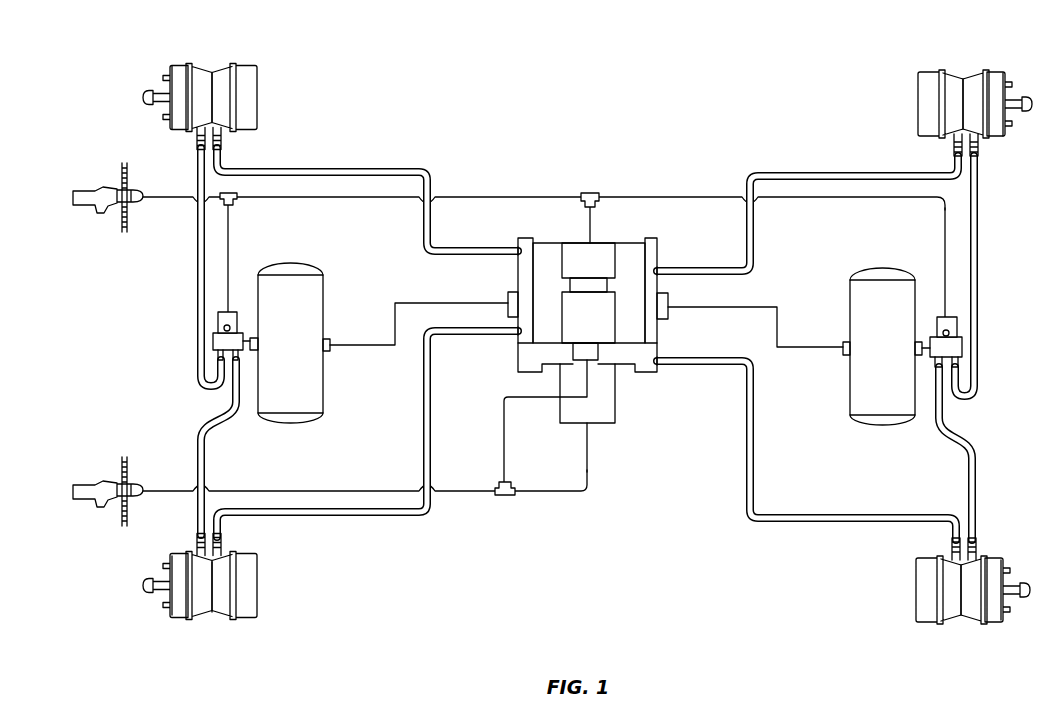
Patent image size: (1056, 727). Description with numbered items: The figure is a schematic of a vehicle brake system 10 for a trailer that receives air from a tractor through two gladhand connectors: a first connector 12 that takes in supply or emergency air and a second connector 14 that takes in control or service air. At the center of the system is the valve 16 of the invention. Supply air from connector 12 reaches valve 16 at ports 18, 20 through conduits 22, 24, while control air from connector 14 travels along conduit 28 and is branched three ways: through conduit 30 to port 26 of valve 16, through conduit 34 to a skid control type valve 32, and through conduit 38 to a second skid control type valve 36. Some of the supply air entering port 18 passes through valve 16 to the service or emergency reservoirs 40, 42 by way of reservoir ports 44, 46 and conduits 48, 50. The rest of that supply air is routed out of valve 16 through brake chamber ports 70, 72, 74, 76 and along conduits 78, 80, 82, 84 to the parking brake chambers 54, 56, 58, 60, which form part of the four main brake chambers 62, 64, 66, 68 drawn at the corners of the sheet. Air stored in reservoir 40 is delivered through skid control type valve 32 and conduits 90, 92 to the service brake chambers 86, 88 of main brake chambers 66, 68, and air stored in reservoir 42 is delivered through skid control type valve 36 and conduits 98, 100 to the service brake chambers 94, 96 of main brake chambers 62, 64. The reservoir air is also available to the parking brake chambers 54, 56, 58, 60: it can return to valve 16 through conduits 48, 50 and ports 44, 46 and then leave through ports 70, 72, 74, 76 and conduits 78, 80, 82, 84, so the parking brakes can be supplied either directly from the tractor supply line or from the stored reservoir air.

The vehicle brake system 10 is at (593, 125).
The first gladhand connector 12 is at (104, 482).
The second gladhand connector 14 is at (103, 188).
The valve 16 is at (593, 329).
The port 18 is at (588, 425).
The port 20 is at (592, 361).
The conduit 22 is at (447, 493).
The conduit 24 is at (504, 442).
The port 26 is at (590, 240).
The conduit 28 is at (506, 197).
The conduit 30 is at (590, 219).
The skid control type valve 32 is at (240, 328).
The conduit 34 is at (229, 234).
The skid control type valve 36 is at (937, 328).
The conduit 38 is at (945, 229).
The service or emergency reservoir 40 is at (306, 379).
The service or emergency reservoir 42 is at (894, 363).
The reservoir port 44 is at (509, 301).
The reservoir port 46 is at (668, 306).
The conduit 48 is at (395, 318).
The conduit 50 is at (777, 333).
The parking brake chamber 54 is at (919, 99).
The parking brake chamber 56 is at (918, 585).
The parking brake chamber 58 is at (257, 583).
The parking brake chamber 60 is at (257, 99).
The main brake chamber 62 is at (959, 72).
The main brake chamber 64 is at (952, 620).
The main brake chamber 66 is at (214, 618).
The main brake chamber 68 is at (228, 66).
The brake chamber port 70 is at (660, 268).
The brake chamber port 72 is at (660, 363).
The brake chamber port 74 is at (516, 339).
The brake chamber port 76 is at (518, 249).
The conduit 78 is at (814, 170).
The conduit 80 is at (850, 521).
The conduit 82 is at (338, 518).
The conduit 84 is at (312, 170).
The service brake chamber 86 is at (186, 618).
The service brake chamber 88 is at (181, 66).
The conduit 90 is at (205, 447).
The conduit 92 is at (197, 263).
The service brake chamber 94 is at (998, 74).
The service brake chamber 96 is at (998, 619).
The conduit 98 is at (978, 245).
The conduit 100 is at (976, 468).